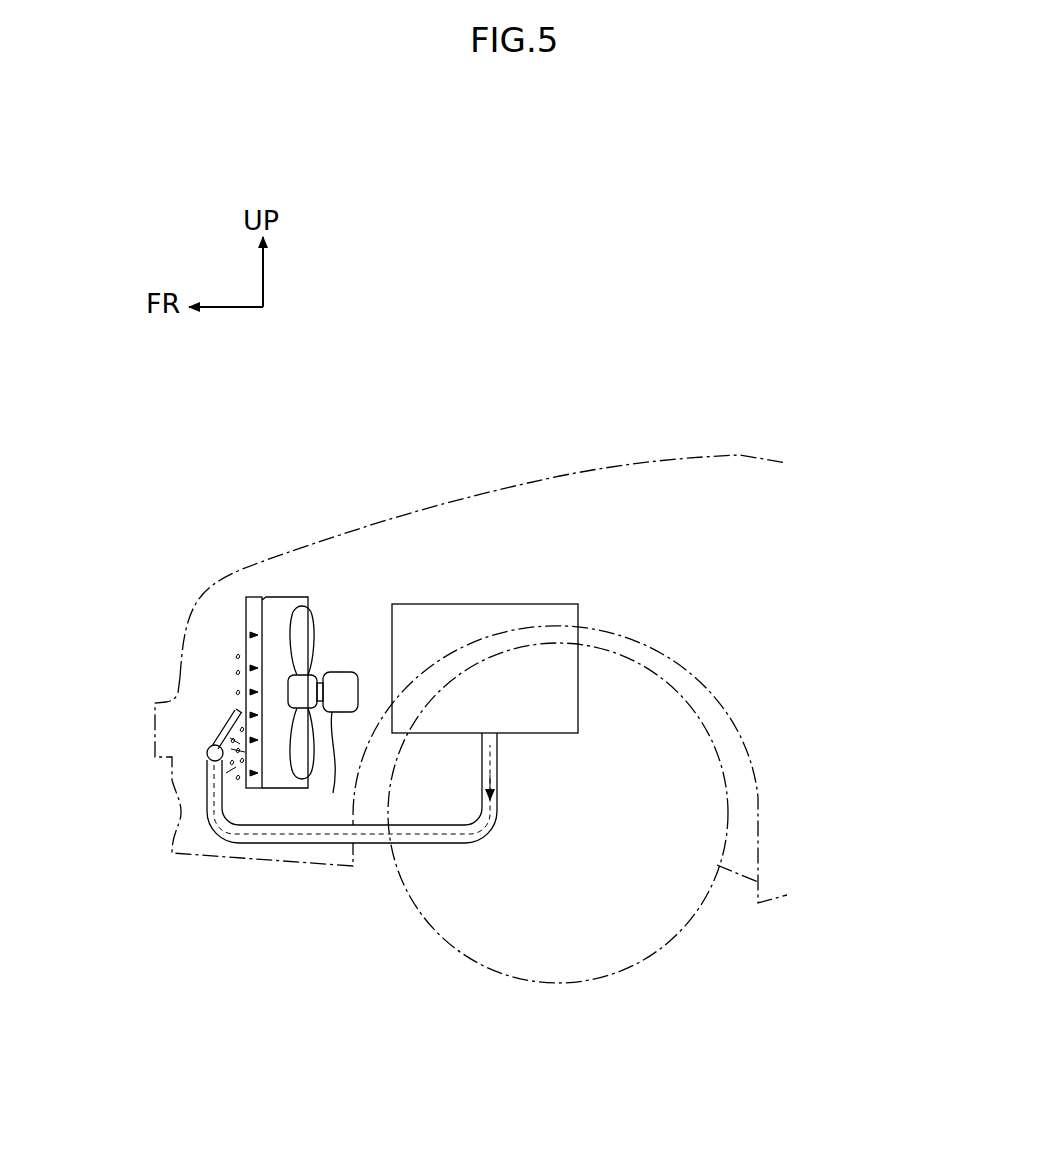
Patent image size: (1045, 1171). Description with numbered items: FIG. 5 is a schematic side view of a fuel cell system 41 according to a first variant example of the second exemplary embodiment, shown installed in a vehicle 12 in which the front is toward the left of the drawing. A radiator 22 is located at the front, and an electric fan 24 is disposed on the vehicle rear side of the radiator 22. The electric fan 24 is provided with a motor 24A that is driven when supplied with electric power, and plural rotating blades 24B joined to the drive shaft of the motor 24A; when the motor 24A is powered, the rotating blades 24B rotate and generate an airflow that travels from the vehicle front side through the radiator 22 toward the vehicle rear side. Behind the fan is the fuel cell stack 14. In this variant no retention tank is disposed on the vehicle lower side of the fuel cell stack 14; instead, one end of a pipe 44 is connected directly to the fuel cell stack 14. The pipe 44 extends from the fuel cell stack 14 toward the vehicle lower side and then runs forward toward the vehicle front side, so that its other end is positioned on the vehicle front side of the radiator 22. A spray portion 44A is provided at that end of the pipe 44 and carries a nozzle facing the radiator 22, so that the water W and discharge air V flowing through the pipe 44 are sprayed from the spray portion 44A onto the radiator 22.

The vehicle 12 is at (468, 410).
The fuel cell stack 14 is at (552, 604).
The radiator 22 is at (246, 622).
The electric fan 24 is at (340, 670).
The motor 24A is at (331, 766).
The rotating blades 24B is at (296, 624).
The fuel cell system 41 is at (391, 550).
The pipe 44 is at (323, 848).
The spray portion 44A is at (204, 757).
The discharge air V is at (226, 713).
The water W is at (231, 690).